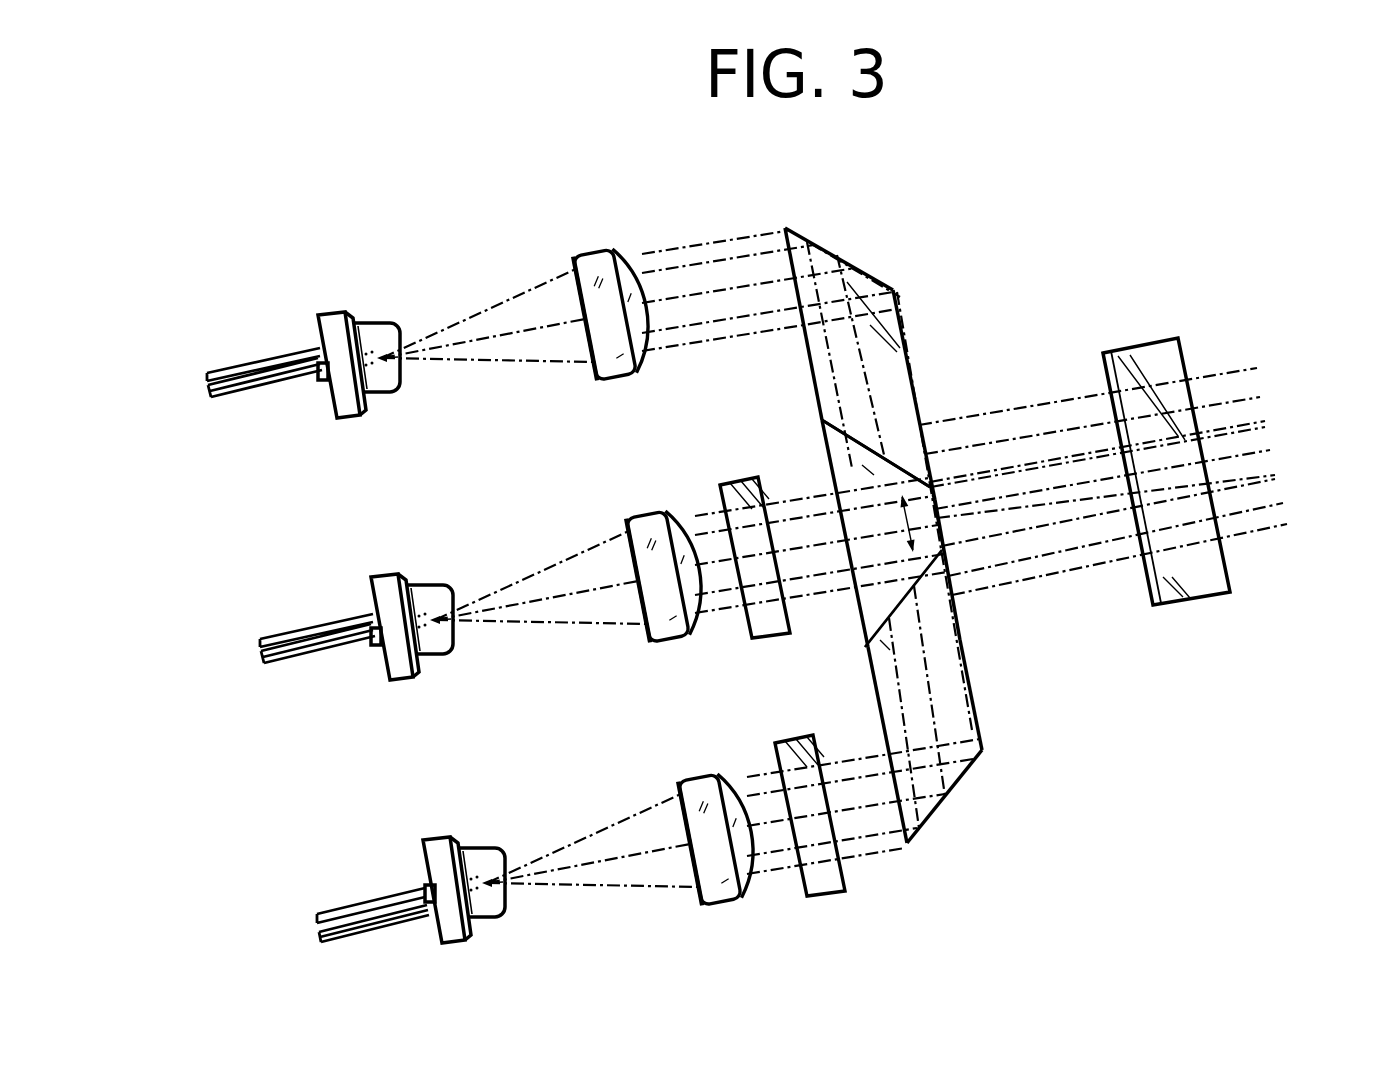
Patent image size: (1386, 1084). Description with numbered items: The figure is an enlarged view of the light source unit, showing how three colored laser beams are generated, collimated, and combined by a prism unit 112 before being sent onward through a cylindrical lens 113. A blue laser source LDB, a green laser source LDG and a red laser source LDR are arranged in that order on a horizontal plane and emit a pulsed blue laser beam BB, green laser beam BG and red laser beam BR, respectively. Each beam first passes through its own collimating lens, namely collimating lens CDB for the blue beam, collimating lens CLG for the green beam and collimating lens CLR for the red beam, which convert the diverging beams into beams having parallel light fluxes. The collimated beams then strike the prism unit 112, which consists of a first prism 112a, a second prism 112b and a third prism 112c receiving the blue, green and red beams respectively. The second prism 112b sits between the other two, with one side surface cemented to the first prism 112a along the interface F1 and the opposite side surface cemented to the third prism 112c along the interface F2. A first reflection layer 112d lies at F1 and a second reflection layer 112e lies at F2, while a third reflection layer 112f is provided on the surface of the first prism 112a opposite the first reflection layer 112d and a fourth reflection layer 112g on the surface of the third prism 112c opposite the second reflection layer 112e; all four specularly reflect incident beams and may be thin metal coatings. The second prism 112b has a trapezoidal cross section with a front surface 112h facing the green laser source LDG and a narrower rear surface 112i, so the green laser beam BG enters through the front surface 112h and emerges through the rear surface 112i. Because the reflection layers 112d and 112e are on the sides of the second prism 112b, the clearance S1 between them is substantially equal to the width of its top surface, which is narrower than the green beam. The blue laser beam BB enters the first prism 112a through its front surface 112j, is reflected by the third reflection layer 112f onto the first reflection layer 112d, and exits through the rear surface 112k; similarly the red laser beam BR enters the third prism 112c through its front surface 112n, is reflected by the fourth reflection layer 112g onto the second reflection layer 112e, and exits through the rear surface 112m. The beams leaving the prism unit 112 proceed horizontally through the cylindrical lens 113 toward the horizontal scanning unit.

The blue laser source LDB is at (335, 325).
The green laser source LDG is at (390, 587).
The red laser source LDR is at (440, 858).
The blue laser beam BB is at (457, 323).
The green laser beam BG is at (510, 583).
The red laser beam BR is at (567, 847).
The collimating lens CDB is at (610, 360).
The collimating lens CLG is at (663, 623).
The collimating lens CLR is at (710, 890).
The cemented surfaces of first and second prisms F1 is at (847, 435).
The cemented surfaces of second and third prisms F2 is at (878, 622).
The clearance between reflection layers S1 is at (905, 538).
The prism unit 112 is at (974, 567).
The first prism 112a is at (929, 408).
The second prism 112b is at (946, 503).
The third prism 112c is at (976, 661).
The first reflection layer 112d is at (796, 435).
The second reflection layer 112e is at (847, 631).
The third reflection layer 112f is at (868, 268).
The fourth reflection layer 112g is at (970, 780).
The front surface 112h is at (822, 478).
The rear surface 112i is at (946, 534).
The front surface 112j is at (786, 260).
The rear surface 112k is at (912, 374).
The rear surface 112m is at (980, 716).
The front surface 112n is at (898, 814).
The cylindrical lens 113 is at (1142, 342).